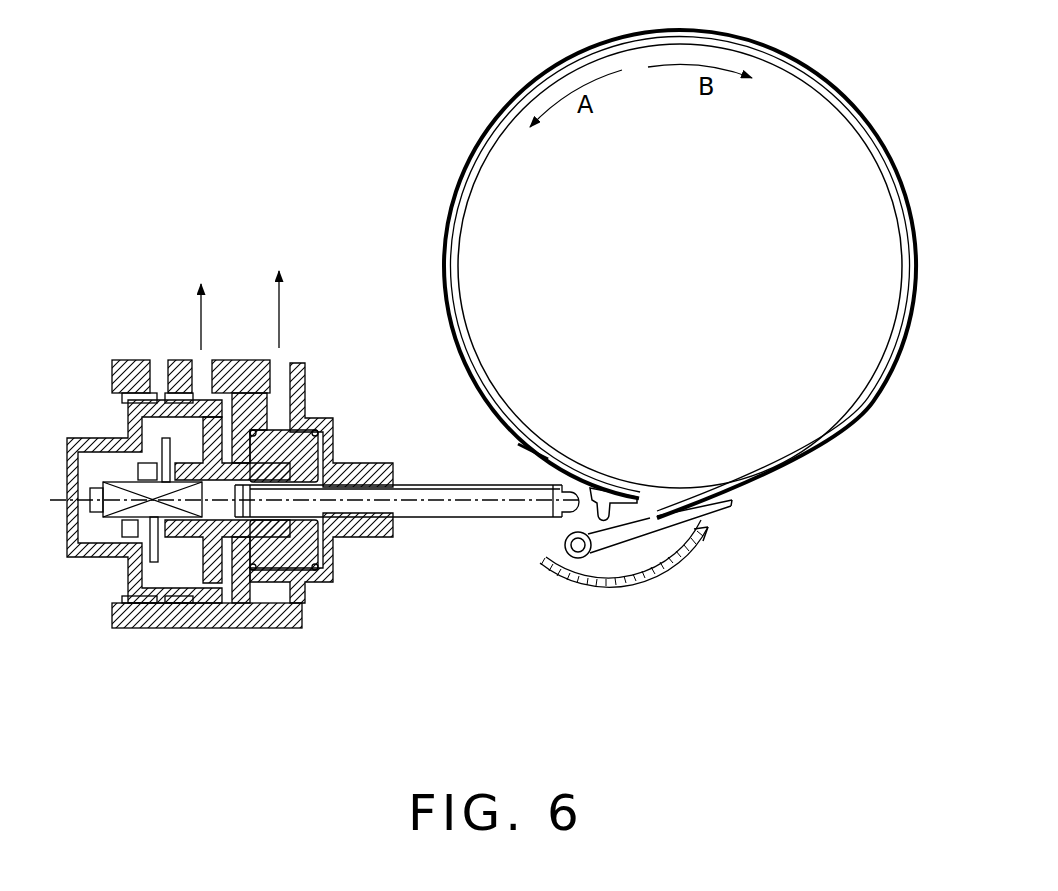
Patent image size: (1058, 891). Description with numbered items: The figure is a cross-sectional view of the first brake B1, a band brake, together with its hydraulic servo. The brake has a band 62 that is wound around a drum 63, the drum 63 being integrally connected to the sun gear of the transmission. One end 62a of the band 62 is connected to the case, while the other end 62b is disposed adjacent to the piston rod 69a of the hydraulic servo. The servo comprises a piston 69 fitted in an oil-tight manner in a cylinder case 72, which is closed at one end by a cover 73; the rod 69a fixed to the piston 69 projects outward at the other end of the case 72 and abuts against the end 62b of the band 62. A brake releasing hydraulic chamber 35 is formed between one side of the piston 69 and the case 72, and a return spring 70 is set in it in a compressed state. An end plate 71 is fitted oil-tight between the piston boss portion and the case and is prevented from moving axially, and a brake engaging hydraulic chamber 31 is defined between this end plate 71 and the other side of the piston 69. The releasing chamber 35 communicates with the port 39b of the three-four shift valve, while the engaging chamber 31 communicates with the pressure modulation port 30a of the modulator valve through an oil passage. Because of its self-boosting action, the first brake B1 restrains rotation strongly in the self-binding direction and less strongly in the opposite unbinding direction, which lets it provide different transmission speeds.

The first brake B1 is at (136, 343).
The pressure modulation port 30a is at (202, 302).
The port 39b is at (282, 294).
The brake engaging hydraulic chamber 31 is at (235, 357).
The brake releasing hydraulic chamber 35 is at (281, 412).
The cover 73 is at (100, 558).
The end plate 71 is at (203, 607).
The piston 69 is at (240, 590).
The piston rod 69a is at (493, 520).
The cylinder case 72 is at (268, 575).
The return spring 70 is at (298, 598).
The band 62 is at (787, 477).
The end of the band 62a is at (598, 558).
The end of the band 62b is at (641, 494).
The drum 63 is at (867, 152).